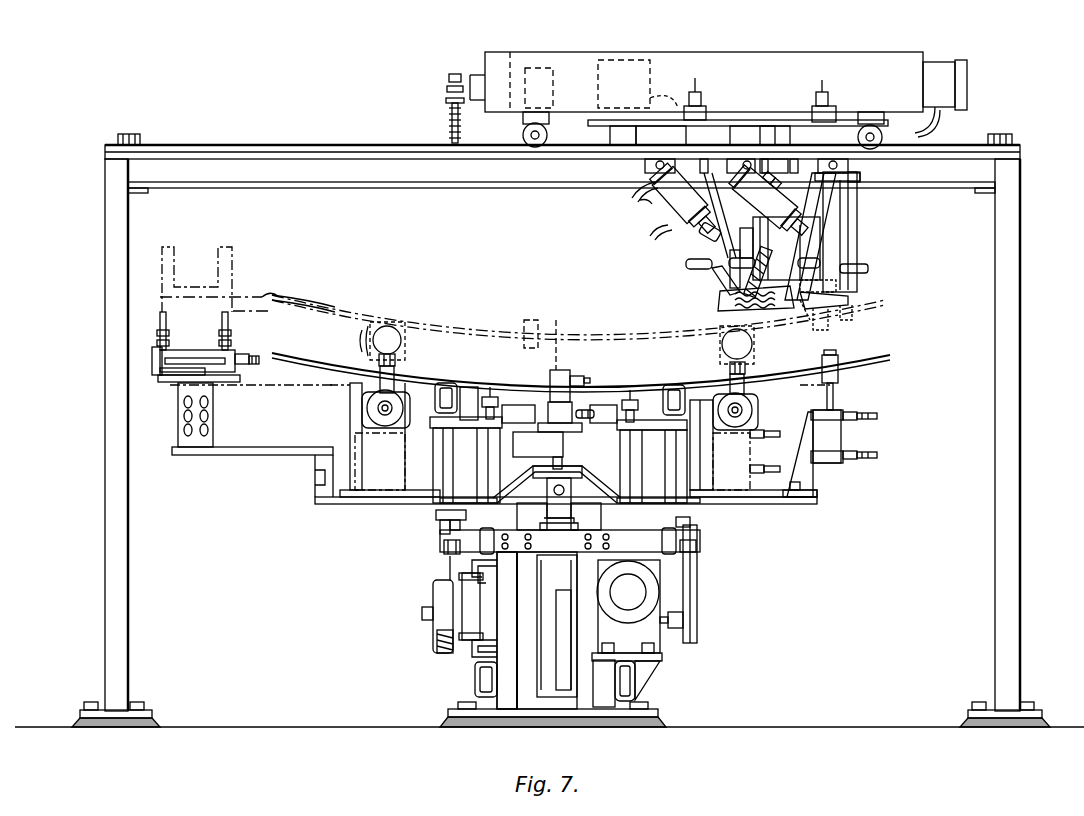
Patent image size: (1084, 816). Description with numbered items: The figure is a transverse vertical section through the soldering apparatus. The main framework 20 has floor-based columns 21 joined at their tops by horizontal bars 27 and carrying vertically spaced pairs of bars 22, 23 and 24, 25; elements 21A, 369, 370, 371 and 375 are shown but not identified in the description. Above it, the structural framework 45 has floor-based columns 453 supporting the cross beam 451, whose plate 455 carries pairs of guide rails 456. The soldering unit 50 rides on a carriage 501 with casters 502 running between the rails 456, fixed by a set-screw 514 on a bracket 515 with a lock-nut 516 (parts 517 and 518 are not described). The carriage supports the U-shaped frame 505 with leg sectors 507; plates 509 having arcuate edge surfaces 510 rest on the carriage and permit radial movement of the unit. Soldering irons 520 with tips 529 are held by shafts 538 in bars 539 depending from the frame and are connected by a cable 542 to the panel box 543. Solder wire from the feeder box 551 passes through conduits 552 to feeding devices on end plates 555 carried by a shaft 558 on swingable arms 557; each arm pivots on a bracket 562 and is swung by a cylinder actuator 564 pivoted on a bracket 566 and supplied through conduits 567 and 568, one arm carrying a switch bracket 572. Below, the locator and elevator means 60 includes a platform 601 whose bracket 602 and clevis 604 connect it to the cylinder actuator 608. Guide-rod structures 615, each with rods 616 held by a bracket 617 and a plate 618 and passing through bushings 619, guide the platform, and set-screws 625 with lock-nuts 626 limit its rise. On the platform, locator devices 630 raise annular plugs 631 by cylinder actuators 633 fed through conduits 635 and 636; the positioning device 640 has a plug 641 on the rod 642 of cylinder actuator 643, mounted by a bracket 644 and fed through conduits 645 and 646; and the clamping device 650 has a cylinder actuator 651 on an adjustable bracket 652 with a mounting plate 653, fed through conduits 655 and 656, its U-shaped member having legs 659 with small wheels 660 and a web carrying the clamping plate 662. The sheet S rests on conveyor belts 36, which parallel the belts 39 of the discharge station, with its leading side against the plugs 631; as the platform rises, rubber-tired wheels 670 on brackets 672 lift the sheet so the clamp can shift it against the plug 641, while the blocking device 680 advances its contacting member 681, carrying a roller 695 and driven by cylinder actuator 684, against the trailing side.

The main framework 20 is at (474, 686).
The columns 21 is at (516, 630).
The column plate 21A is at (510, 690).
The bar 22 is at (645, 686).
The bar 23 is at (476, 668).
The bar 24 is at (670, 560).
The bar 25 is at (470, 562).
The horizontally disposed bars 27 is at (559, 513).
The conveyor belts 36 is at (445, 383).
The conveyor belts 39 is at (470, 390).
The structural framework 45 is at (100, 190).
The soldering unit 50 is at (635, 255).
The locator and elevator means 60 is at (330, 510).
The sheet S is at (474, 320).
The gear housing 369 is at (640, 628).
The bar 370 is at (692, 600).
The fitting 371 is at (684, 620).
The plate 375 is at (436, 634).
The cross beam 451 is at (205, 170).
The columns 453 is at (120, 232).
The plates 455 is at (288, 152).
The guide rails 456 is at (236, 145).
The carriage 501 is at (604, 50).
The casters 502 is at (546, 126).
The U-shaped frame 505 is at (773, 140).
The leg sectors 507 is at (656, 135).
The plates 509 is at (600, 126).
The arcuate edge surfaces 510 is at (620, 128).
The set-screw 514 is at (458, 74).
The bracket 515 is at (446, 100).
The lock-nut 516 is at (450, 88).
The block 517 is at (702, 122).
The pin 518 is at (696, 95).
The soldering irons 520 is at (848, 300).
The tip 529 is at (830, 314).
The shafts 538 is at (868, 266).
The bars 539 is at (858, 236).
The cable 542 is at (938, 128).
The panel box 543 is at (940, 88).
The box 551 is at (660, 60).
The conduit 552 is at (722, 294).
The end plates 555 is at (724, 280).
The arms 557 is at (710, 243).
The shaft 558 is at (688, 264).
The bracket 562 is at (858, 178).
The cylinder actuator 564 is at (684, 196).
The bracket 566 is at (648, 178).
The conduit 567 is at (645, 203).
The conduit 568 is at (656, 226).
The switch bracket 572 is at (716, 160).
The platform 601 is at (330, 498).
The bracket 602 is at (545, 471).
The clevis member 604 is at (562, 500).
The cylinder actuator 608 is at (558, 672).
The guide-rod structures 615 is at (438, 521).
The rods 616 is at (456, 474).
The bracket 617 is at (446, 548).
The plate 618 is at (442, 430).
The bushings 619 is at (442, 533).
The set-screws 625 is at (492, 398).
The lock-nuts 626 is at (515, 435).
The locator devices 630 is at (402, 356).
The annular plugs 631 is at (372, 362).
The cylinder actuator 633 is at (360, 496).
The conduits 635 is at (768, 465).
The conduits 636 is at (778, 425).
The positioning device 640 is at (896, 396).
The annular plug 641 is at (840, 366).
The rod 642 is at (836, 392).
The cylinder actuator 643 is at (844, 436).
The bracket 644 is at (806, 472).
The conduit 645 is at (878, 456).
The conduit 646 is at (878, 416).
The clamping device 650 is at (155, 355).
The cylinder actuator 651 is at (196, 354).
The bracket 652 is at (212, 418).
The mounting plate 653 is at (214, 385).
The conduit 655 is at (160, 322).
The conduit 656 is at (230, 326).
The legs 659 is at (194, 370).
The small wheels 660 is at (185, 383).
The clamping plate 662 is at (258, 347).
The wheels 670 is at (385, 338).
The brackets 672 is at (380, 488).
The blocking device 680 is at (592, 372).
The contacting member 681 is at (565, 377).
The cylinder actuator 684 is at (566, 414).
The roller 695 is at (584, 378).